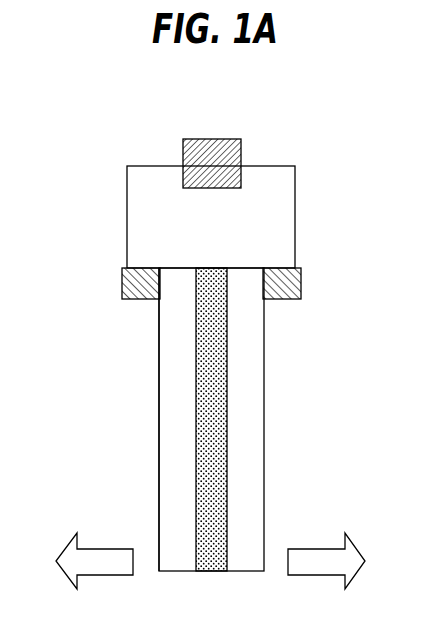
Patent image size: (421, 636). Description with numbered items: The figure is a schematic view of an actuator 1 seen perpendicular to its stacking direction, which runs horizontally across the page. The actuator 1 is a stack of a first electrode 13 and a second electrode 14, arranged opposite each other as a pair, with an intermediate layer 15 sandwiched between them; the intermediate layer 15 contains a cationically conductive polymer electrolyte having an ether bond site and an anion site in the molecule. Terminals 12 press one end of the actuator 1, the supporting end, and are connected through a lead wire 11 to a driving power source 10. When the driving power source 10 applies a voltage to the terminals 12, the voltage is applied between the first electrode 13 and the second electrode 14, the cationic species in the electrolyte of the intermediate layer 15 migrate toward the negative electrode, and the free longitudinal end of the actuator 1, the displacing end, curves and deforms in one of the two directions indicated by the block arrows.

The actuator 1 is at (75, 131).
The driving power source 10 is at (205, 139).
The lead wire 11 is at (295, 192).
The terminals 12 is at (143, 268).
The first electrode 13 is at (257, 360).
The second electrode 14 is at (172, 330).
The intermediate layer 15 is at (200, 424).